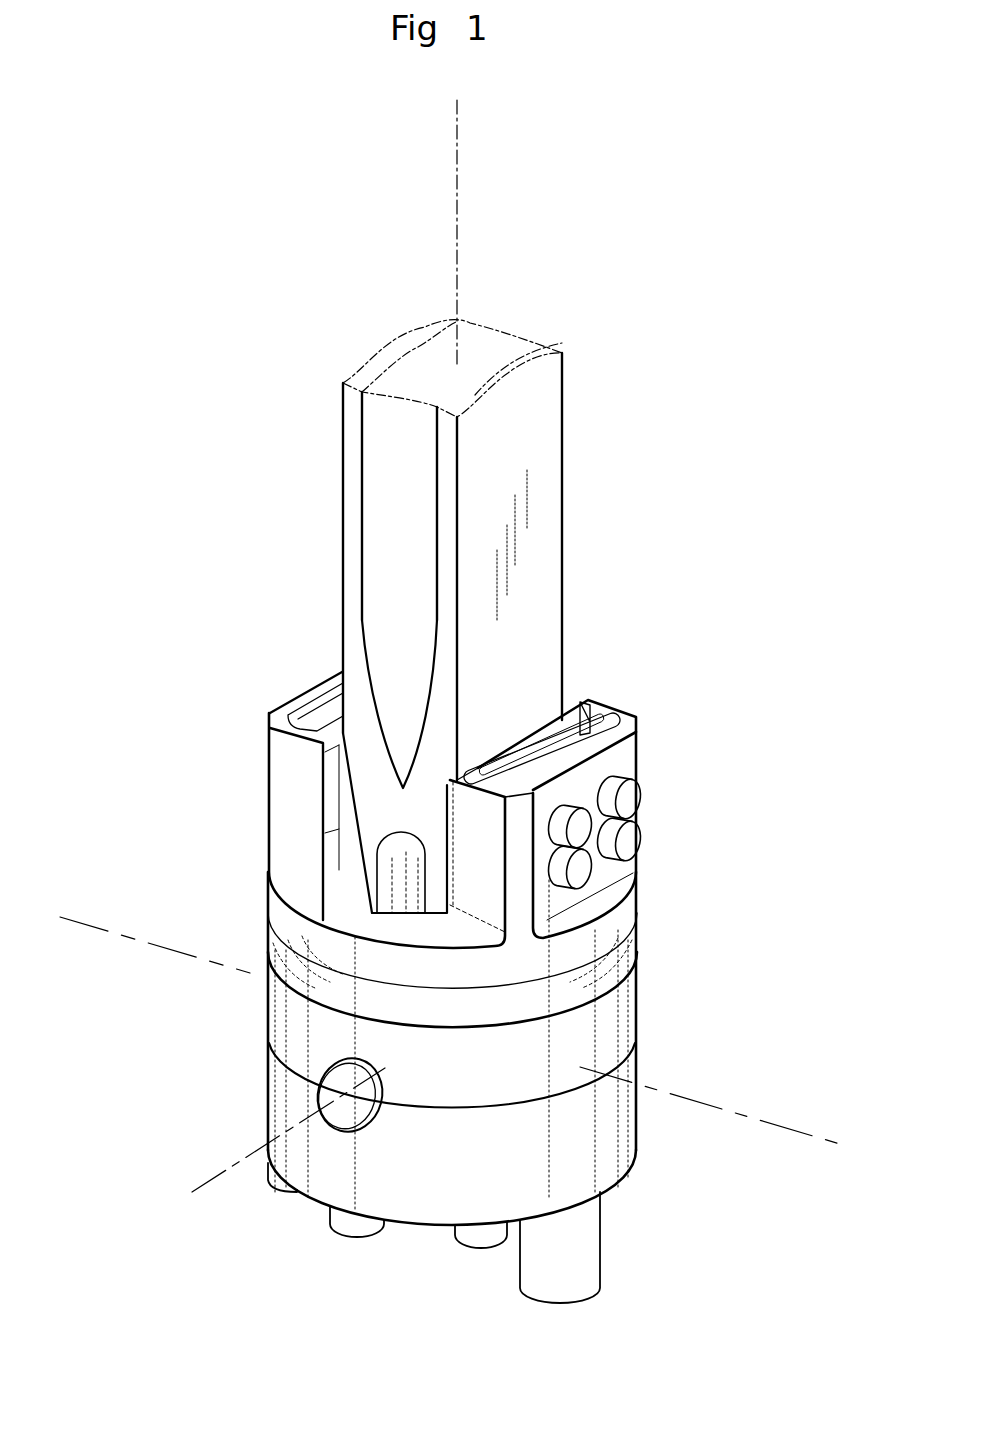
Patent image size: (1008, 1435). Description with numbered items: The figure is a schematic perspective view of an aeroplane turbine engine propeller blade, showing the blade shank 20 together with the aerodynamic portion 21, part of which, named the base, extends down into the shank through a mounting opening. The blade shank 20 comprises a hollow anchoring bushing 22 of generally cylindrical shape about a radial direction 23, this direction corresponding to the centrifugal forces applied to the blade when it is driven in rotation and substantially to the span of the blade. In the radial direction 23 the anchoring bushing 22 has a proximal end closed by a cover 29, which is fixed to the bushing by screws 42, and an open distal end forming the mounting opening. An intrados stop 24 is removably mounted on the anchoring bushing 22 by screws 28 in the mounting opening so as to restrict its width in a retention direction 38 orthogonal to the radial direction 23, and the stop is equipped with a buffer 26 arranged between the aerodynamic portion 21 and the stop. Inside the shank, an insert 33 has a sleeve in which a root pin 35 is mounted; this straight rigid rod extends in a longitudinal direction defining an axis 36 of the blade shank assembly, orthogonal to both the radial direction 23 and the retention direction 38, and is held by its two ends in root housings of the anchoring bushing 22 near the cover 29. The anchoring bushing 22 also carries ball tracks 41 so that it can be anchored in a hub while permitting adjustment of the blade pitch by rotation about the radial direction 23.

The blade shank 20 is at (236, 995).
The aerodynamic portion 21 is at (557, 443).
The anchoring bushing 22 is at (610, 1032).
The radial direction 23 is at (460, 232).
The intrados stop 24 is at (563, 747).
The buffer 26 is at (305, 807).
The screws 28 is at (578, 868).
The cover 29 is at (520, 1170).
The insert 33 is at (365, 870).
The root pin 35 is at (333, 1093).
The axis of the blade shank assembly 36 is at (198, 1190).
The retention direction 38 is at (163, 948).
The ball tracks 41 is at (602, 970).
The screws 42 is at (355, 1227).